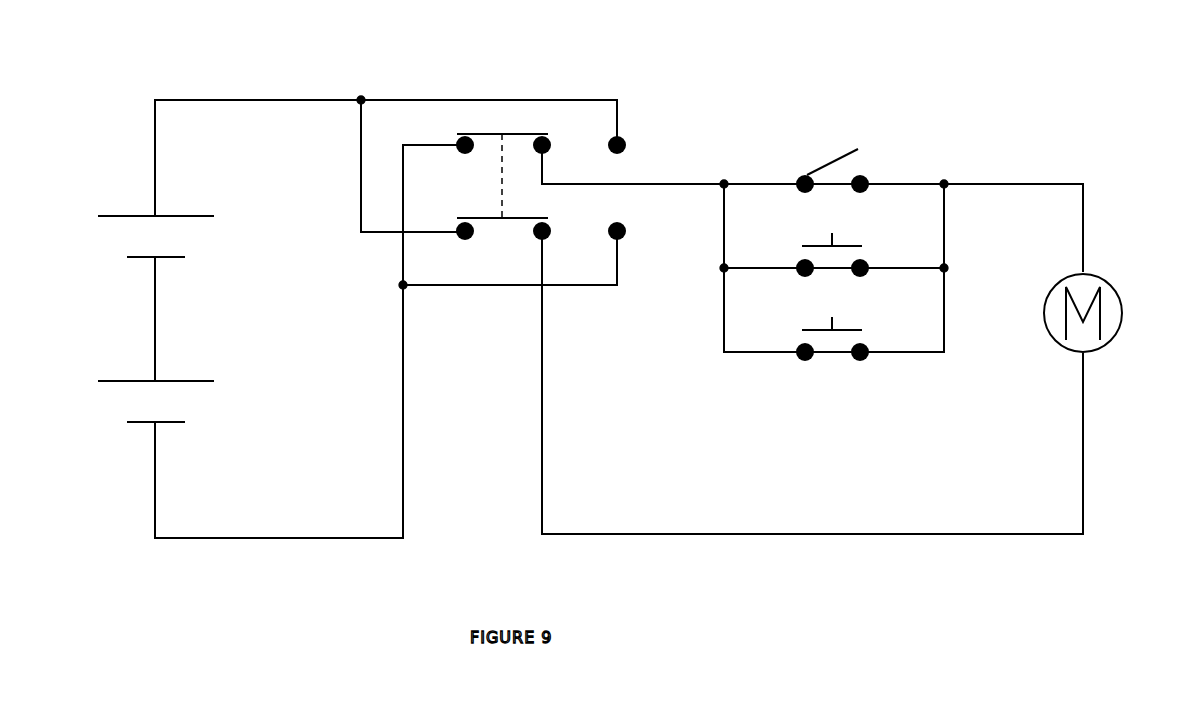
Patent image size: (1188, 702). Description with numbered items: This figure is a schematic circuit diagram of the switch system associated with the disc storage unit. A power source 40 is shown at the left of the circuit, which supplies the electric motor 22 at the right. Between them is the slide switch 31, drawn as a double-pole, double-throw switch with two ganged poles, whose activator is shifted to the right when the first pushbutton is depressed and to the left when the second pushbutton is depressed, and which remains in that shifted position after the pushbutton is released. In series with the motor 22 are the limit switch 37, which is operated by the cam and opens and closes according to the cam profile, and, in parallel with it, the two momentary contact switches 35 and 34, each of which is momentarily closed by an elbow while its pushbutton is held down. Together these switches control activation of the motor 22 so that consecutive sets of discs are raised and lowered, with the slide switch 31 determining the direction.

The battery 40 is at (122, 232).
The slide switch 31 is at (592, 113).
The limit switch 37 is at (867, 158).
The momentary contact switch 35 is at (878, 253).
The momentary contact switch 34 is at (833, 347).
The electric motor 22 is at (1110, 300).